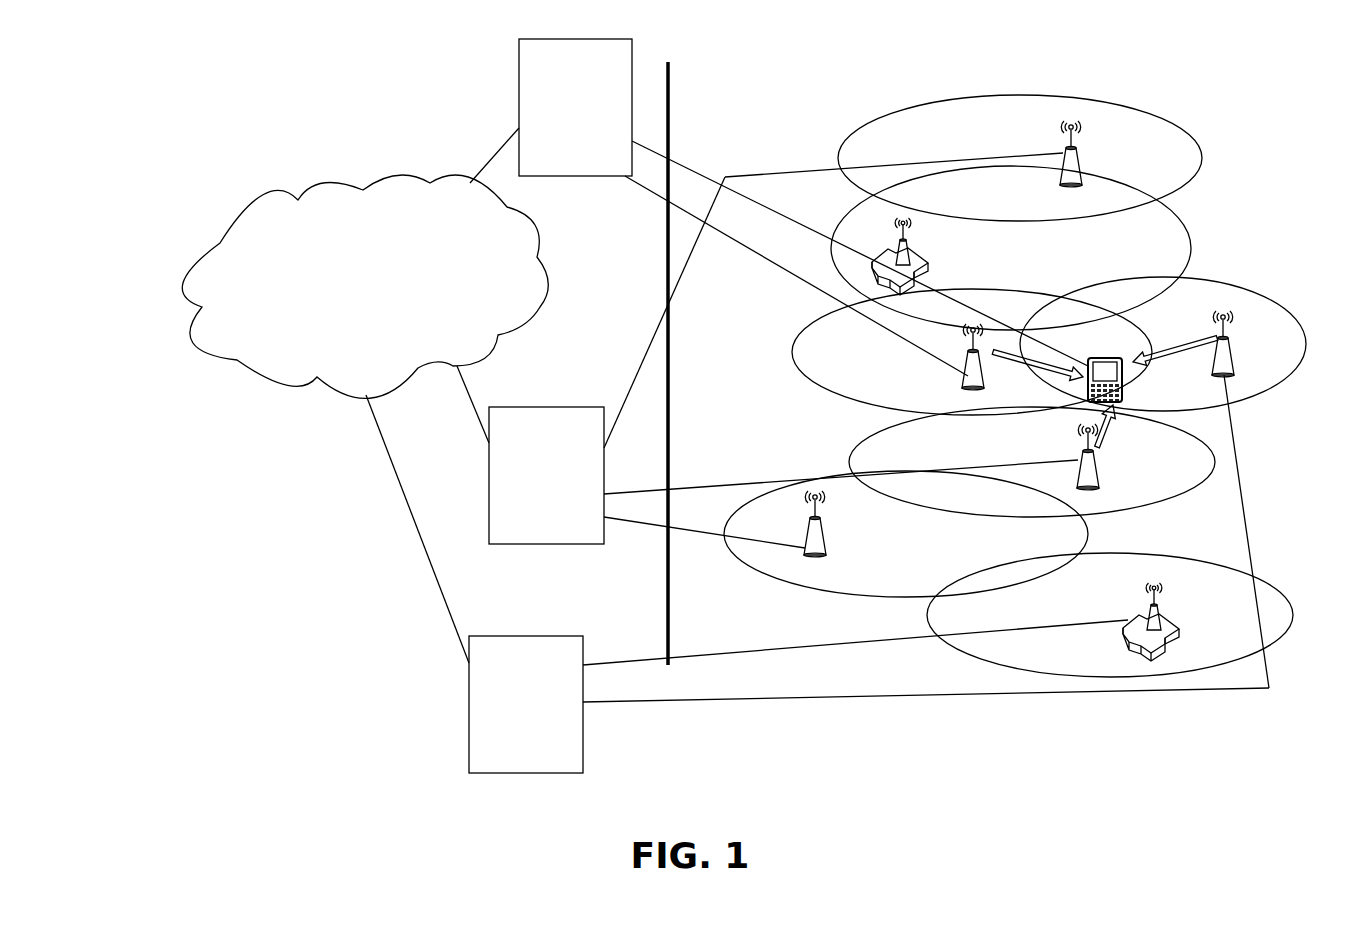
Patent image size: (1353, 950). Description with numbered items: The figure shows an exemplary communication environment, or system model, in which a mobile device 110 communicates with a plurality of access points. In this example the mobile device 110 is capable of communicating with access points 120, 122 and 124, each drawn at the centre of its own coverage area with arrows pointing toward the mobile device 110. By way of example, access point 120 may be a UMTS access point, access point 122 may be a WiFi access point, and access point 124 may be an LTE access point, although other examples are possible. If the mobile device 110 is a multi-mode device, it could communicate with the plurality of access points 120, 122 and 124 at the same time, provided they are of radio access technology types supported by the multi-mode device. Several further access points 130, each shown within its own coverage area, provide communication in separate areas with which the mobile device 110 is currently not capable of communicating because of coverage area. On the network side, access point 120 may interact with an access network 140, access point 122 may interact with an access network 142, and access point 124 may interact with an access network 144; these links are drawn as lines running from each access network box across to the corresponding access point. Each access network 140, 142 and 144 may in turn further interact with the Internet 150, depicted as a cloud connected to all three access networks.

The mobile device 110 is at (1123, 383).
The access point 120 is at (1088, 470).
The access point 122 is at (962, 368).
The access point 124 is at (1228, 358).
The access points 130 is at (1077, 142).
The access network 140 is at (557, 539).
The access network 142 is at (580, 170).
The access network 144 is at (533, 768).
The Internet 150 is at (481, 301).